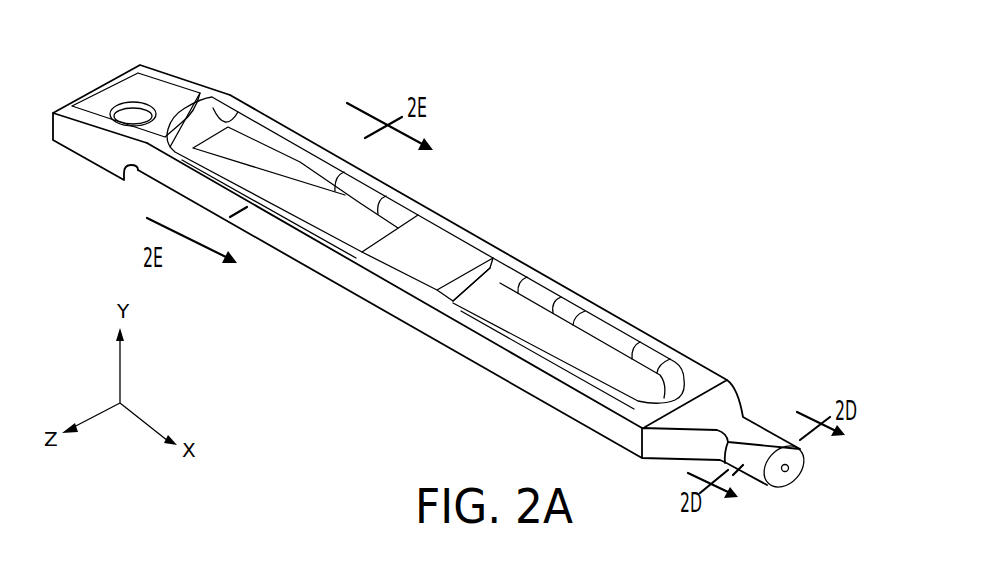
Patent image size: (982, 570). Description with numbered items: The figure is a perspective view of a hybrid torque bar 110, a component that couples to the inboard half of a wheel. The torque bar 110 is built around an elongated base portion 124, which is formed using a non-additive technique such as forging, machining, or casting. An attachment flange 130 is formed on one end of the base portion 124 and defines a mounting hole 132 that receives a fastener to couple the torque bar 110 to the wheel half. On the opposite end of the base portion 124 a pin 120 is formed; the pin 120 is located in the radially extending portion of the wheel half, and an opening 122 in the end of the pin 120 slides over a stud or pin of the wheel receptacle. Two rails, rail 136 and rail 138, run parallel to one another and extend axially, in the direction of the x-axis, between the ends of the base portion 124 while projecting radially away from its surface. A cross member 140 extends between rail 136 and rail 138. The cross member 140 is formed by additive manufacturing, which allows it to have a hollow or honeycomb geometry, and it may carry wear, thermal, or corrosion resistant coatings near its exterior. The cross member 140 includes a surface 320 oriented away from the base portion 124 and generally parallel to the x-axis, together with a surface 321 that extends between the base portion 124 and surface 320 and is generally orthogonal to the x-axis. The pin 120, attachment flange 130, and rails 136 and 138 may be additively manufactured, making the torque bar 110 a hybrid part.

The torque bar 110 is at (438, 288).
The pin 120 is at (774, 452).
The opening 122 is at (789, 472).
The base portion 124 is at (253, 160).
The attachment flange 130 is at (90, 152).
The mounting hole 132 is at (124, 106).
The rail 136 is at (602, 313).
The rail 138 is at (447, 307).
The cross member 140 is at (437, 247).
The surface 320 is at (420, 265).
The surface 321 is at (473, 280).